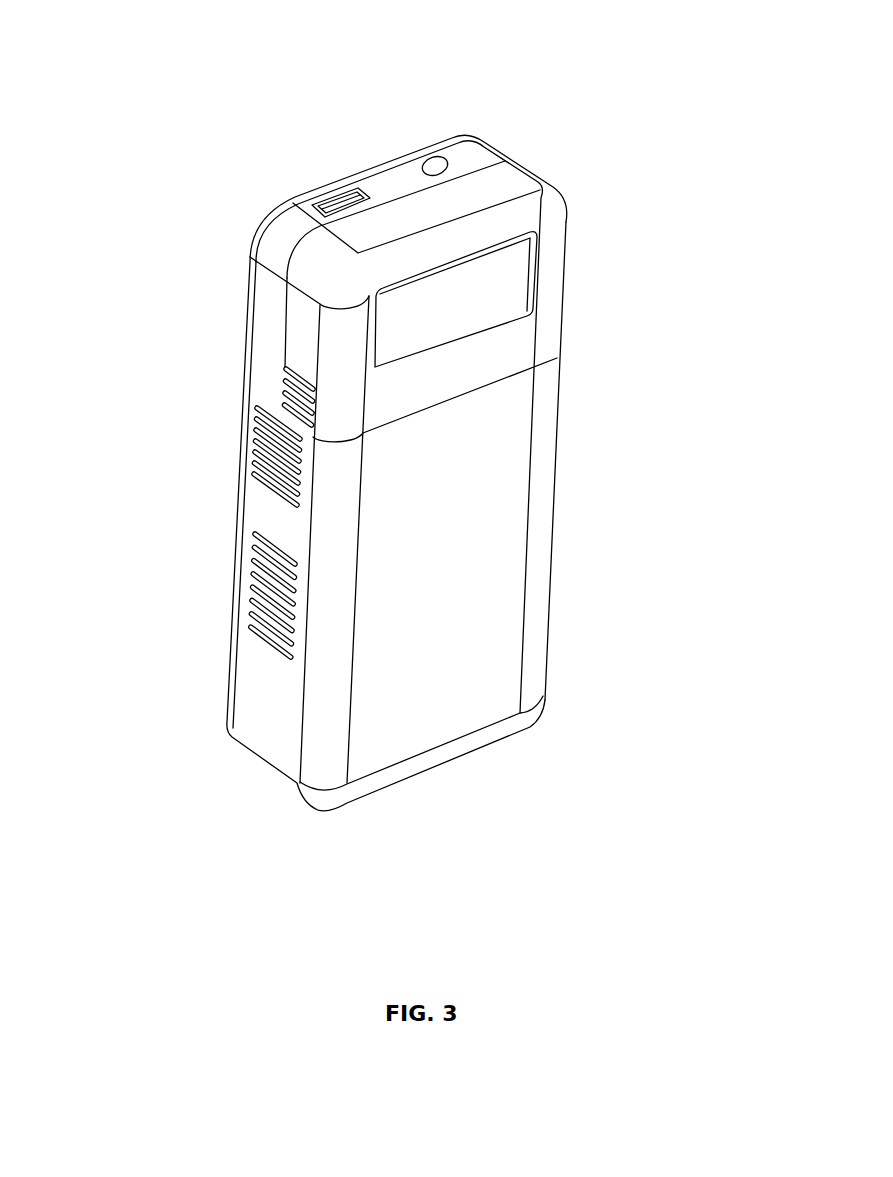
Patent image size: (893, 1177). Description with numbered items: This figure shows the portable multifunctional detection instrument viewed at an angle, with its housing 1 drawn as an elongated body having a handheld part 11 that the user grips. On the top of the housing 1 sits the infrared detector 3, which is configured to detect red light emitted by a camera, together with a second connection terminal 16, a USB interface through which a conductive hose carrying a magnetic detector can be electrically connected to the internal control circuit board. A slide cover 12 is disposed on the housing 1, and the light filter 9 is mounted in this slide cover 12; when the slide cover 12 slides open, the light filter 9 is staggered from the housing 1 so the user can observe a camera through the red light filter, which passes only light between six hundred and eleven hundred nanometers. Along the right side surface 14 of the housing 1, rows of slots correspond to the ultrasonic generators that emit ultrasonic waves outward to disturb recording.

The housing 1 is at (498, 522).
The infrared detector 3 is at (431, 158).
The light filter 9 is at (508, 277).
The handheld part 11 is at (552, 647).
The slide cover 12 is at (495, 187).
The right side surface 14 is at (273, 505).
The second connection terminal 16 is at (340, 203).